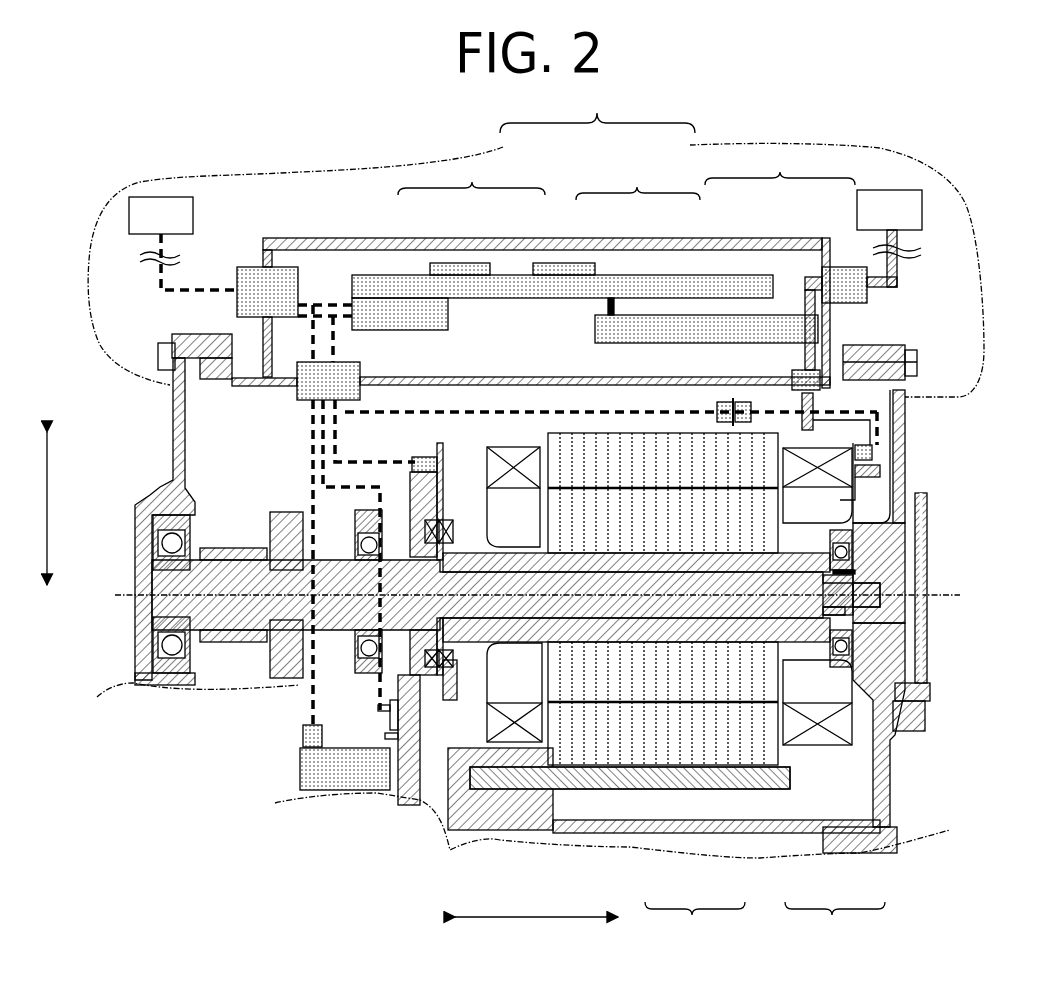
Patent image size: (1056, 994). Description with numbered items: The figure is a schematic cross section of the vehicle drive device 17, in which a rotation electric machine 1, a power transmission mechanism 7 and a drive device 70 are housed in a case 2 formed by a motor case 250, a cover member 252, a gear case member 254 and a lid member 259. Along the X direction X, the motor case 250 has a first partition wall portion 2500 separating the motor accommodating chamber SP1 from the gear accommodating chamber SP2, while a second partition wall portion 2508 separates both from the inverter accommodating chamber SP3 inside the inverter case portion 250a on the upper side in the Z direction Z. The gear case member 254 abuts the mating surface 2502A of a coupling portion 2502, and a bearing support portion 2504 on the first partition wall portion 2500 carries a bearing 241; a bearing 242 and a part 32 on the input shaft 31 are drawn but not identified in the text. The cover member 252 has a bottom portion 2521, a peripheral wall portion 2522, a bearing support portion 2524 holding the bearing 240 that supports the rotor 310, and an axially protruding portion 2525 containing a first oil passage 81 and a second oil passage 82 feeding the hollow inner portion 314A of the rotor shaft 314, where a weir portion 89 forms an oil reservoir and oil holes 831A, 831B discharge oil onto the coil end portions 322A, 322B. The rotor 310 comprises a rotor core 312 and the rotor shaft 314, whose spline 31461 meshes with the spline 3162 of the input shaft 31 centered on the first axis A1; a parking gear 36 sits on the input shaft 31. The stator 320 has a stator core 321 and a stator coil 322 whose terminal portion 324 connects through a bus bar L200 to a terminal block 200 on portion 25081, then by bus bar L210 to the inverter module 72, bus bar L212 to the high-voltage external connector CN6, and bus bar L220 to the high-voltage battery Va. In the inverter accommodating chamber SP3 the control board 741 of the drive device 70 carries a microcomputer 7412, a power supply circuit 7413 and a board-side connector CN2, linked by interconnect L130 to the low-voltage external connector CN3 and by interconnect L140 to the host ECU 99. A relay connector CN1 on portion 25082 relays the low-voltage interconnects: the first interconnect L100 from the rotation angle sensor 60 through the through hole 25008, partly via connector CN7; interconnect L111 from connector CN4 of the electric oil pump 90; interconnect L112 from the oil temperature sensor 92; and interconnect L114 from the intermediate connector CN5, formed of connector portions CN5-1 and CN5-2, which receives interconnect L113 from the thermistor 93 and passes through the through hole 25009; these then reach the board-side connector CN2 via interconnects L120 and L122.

The case 2 is at (597, 112).
The vehicle drive device 17 is at (897, 145).
The gear case member 254 is at (314, 262).
The cover member 252 is at (821, 268).
The motor case 250 is at (560, 200).
The lid member 259 is at (585, 195).
The host ECU 99 is at (193, 206).
The interconnect L140 is at (165, 290).
The external connector of the low-voltage system CN3 is at (237, 310).
The inverter case portion 250a is at (265, 258).
The second partition wall portion 2508 is at (531, 276).
The portion of the second partition wall portion 25082 is at (405, 377).
The portion of the second partition wall portion 25081 is at (523, 377).
The control board 741 is at (658, 275).
The drive device 70 is at (638, 182).
The microcomputer 7412 is at (430, 268).
The power supply circuit 7413 is at (542, 276).
The inverter module 72 is at (625, 315).
The board-side connector CN2 is at (400, 330).
The inverter accommodating chamber SP3 is at (486, 332).
The interconnect L130 is at (318, 300).
The interconnect L122 is at (333, 310).
The first interconnect L120 is at (313, 316).
The high-voltage battery Va is at (875, 190).
The external connector of the high-voltage system CN6 is at (842, 268).
The bus bar L220 is at (892, 290).
The bus bar L212 is at (815, 295).
The bus bar L210 is at (800, 370).
The intermediate connector CN5 is at (780, 164).
The connector portion CN5-1 is at (728, 400).
The connector portion CN5-2 is at (745, 400).
The interconnect L114 is at (660, 390).
The through hole 25009 is at (440, 410).
The interconnect L113 is at (878, 400).
The peripheral wall portion 2522 is at (905, 372).
The motor accommodating chamber SP1 is at (843, 392).
The terminal block 200 is at (812, 425).
The rotation electric machine 1 is at (785, 440).
The bus bar L200 is at (880, 426).
The terminal portion 324 is at (873, 450).
The thermistor 93 is at (865, 456).
The mating surface 2502A is at (185, 385).
The coupling portion 2502 is at (240, 348).
The power transmission mechanism 7 is at (216, 468).
The gear accommodating chamber SP2 is at (256, 462).
The relay connector CN1 is at (308, 402).
The first interconnect L100 is at (350, 413).
The interconnect L111 is at (308, 690).
The interconnect L112 is at (310, 725).
The connector CN7 is at (412, 460).
The through hole 25008 is at (435, 447).
The bearing support portion 2504 is at (380, 498).
The first partition wall portion 2500 is at (398, 760).
The connector CN4 is at (303, 735).
The electric oil pump 90 is at (300, 765).
The oil temperature sensor 92 is at (378, 708).
The bearing 242 is at (170, 520).
The bearing 241 is at (367, 530).
The rotation angle sensor 60 is at (447, 515).
The bearing support portion 2524 is at (842, 530).
The input shaft 31 is at (225, 560).
The first axis A1 is at (526, 625).
The collar 32 is at (252, 548).
The parking gear 36 is at (285, 512).
The spline 3162 is at (450, 572).
The spline 31461 is at (450, 618).
The axially protruding portion 2525 is at (878, 593).
The first oil passage 81 is at (903, 595).
The second oil passage 82 is at (845, 612).
The weir portion 89 is at (855, 577).
The stator core 321 is at (640, 770).
The coil end portion 322A is at (512, 450).
The coil end portion 322B is at (882, 470).
The stator coil 322 is at (690, 770).
The stator 320 is at (695, 919).
The rotor shaft 314 is at (810, 800).
The rotor core 312 is at (770, 770).
The rotor 310 is at (835, 917).
The hollow inner portion 314A is at (640, 770).
The bottom portion 2521 is at (905, 495).
The bearing 240 is at (928, 520).
The oil hole 831B is at (910, 705).
The oil hole 831A is at (462, 770).
The Z direction Z is at (64, 509).
The X direction X is at (540, 933).